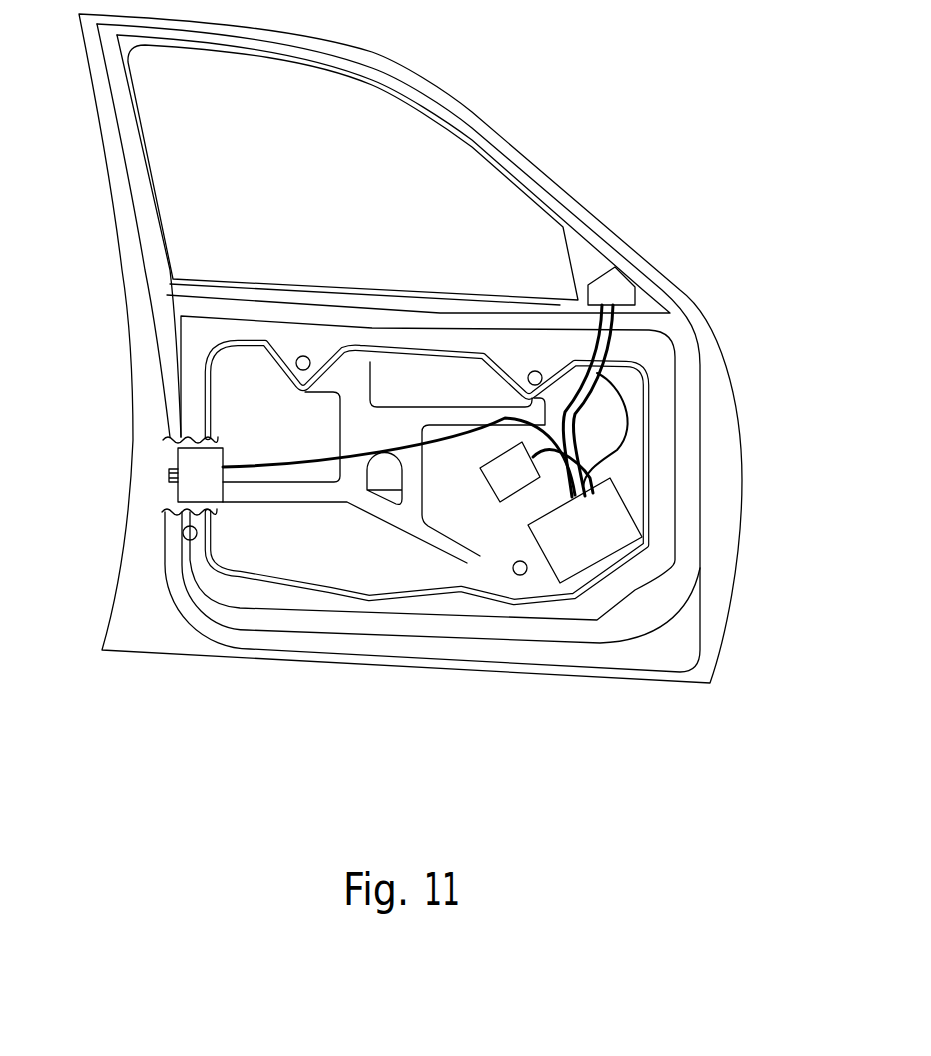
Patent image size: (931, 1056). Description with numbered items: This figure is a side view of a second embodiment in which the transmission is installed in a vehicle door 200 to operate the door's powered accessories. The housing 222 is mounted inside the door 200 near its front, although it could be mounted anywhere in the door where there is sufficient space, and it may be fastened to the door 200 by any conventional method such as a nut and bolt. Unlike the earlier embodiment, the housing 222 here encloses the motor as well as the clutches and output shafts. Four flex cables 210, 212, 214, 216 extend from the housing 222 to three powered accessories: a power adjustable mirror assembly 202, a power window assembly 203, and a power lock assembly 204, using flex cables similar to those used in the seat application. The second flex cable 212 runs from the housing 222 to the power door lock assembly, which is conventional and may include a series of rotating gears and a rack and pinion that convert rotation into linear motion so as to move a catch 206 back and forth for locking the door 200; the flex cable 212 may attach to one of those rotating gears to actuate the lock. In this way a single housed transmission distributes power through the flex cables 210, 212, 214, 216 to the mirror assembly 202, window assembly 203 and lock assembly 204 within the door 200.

The vehicle door 200 is at (712, 323).
The power adjustable mirror assembly 202 is at (610, 287).
The power window assembly 203 is at (513, 473).
The power lock assembly 204 is at (192, 467).
The catch 206 is at (170, 473).
The flex cable 210 is at (600, 458).
The second flex cable 212 is at (255, 465).
The flex cable 214 is at (592, 354).
The flex cable 216 is at (595, 367).
The housing 222 is at (583, 537).